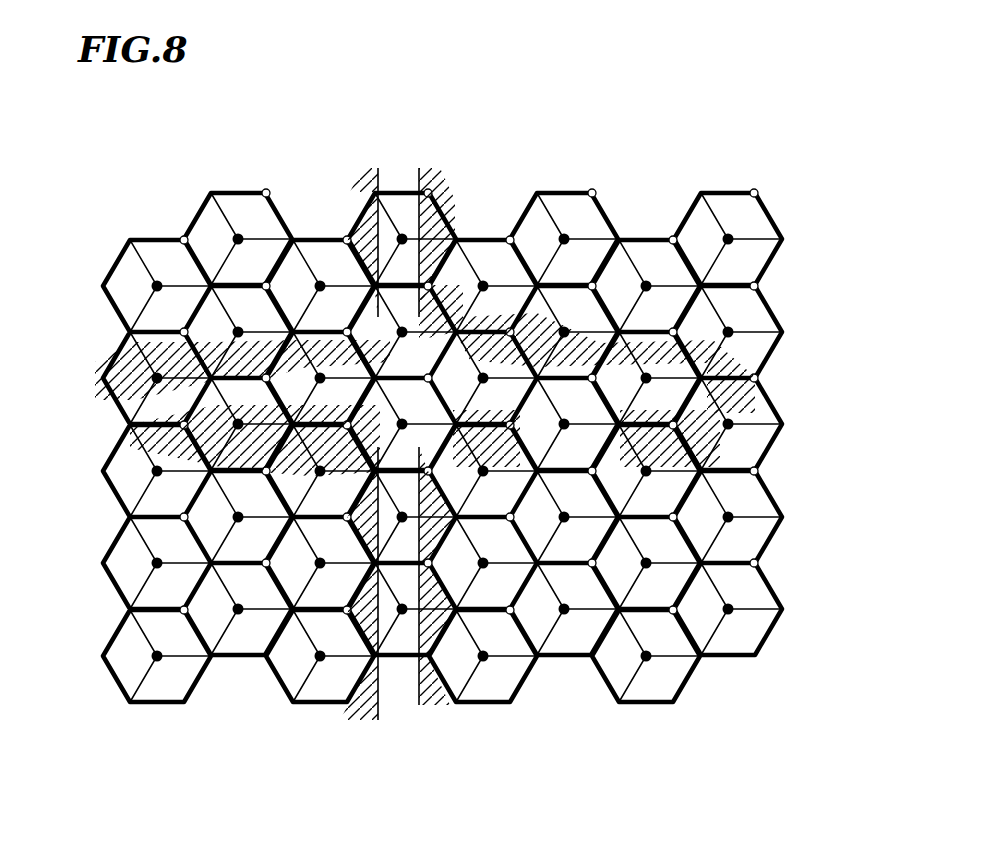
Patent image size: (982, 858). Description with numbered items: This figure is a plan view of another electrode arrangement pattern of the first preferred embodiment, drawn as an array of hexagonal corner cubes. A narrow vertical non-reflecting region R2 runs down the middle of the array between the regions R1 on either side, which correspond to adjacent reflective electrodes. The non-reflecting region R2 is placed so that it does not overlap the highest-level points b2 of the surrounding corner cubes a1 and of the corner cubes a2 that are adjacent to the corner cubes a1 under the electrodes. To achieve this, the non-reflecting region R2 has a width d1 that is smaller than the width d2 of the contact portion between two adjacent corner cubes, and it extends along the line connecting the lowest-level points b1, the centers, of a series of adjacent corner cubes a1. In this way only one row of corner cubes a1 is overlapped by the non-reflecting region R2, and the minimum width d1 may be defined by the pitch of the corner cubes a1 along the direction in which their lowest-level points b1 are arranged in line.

The corner cubes a1 is at (458, 372).
The corner cubes a2 is at (290, 568).
The lowest-level points b1 is at (358, 625).
The highest-level points b2 is at (335, 520).
The width of the non-reflecting region d1 is at (378, 687).
The width of a contact portion d2 is at (455, 700).
The region R1 is at (375, 740).
The non-reflecting region R2 is at (378, 742).